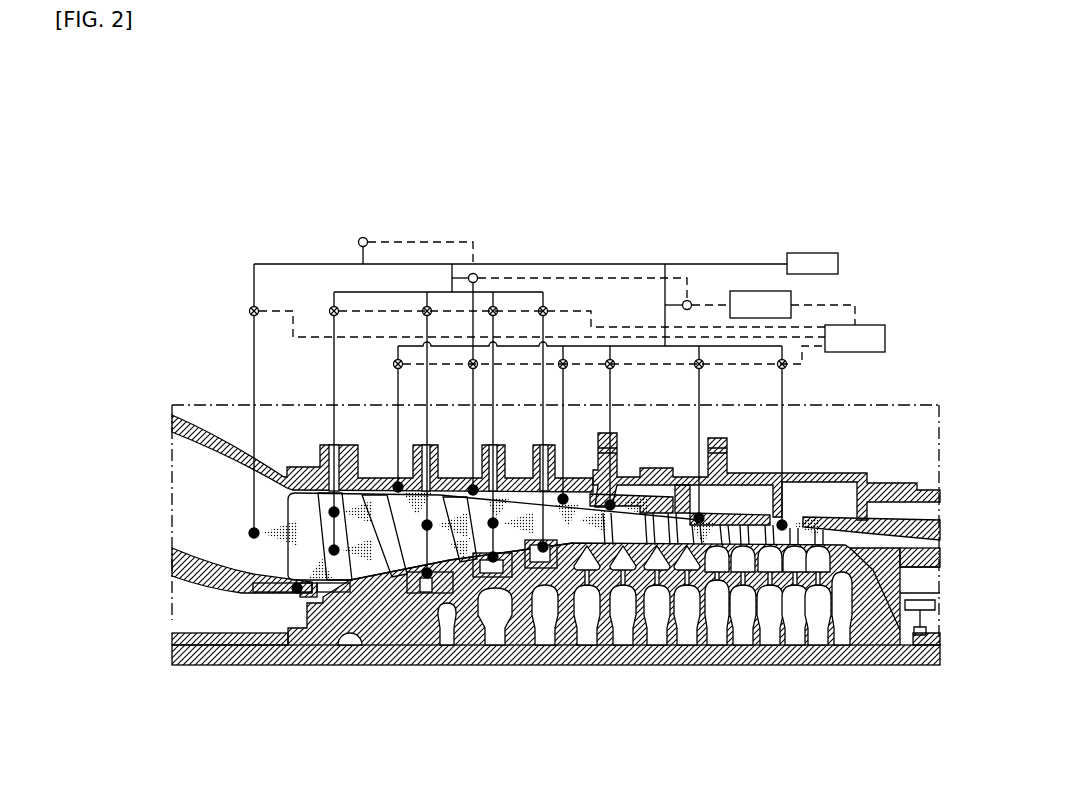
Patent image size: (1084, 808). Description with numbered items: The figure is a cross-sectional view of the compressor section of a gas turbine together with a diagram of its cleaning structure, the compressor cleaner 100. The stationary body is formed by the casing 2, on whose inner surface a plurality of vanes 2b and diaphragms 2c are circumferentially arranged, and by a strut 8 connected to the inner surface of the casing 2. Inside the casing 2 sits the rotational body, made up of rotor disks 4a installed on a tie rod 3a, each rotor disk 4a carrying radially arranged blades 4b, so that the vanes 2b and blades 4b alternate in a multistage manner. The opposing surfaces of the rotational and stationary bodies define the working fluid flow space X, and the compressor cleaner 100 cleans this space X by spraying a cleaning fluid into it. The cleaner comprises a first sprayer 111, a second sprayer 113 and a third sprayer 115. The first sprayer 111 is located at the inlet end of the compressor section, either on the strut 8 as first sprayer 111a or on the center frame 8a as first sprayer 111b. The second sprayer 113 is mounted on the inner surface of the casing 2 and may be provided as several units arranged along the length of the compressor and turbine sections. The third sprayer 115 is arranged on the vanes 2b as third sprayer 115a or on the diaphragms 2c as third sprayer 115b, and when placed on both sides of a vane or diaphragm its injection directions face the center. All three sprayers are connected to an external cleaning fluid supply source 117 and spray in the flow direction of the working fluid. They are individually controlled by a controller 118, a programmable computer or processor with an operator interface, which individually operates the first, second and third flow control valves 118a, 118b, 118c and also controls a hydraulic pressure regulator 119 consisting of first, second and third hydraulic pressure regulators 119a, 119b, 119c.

The compressor cleaner 100 is at (867, 76).
The first sprayer 111 is at (110, 558).
The second sprayer 113 is at (578, 470).
The third sprayer 115 is at (594, 666).
The external cleaning fluid supply source 117 is at (812, 253).
The controller 118 is at (855, 338).
The hydraulic pressure regulator 119 is at (792, 307).
The first flow control valve 118a is at (249, 311).
The second flow control valve 118b is at (393, 364).
The third flow control valve 118c is at (330, 308).
The first hydraulic pressure regulator 119a is at (363, 237).
The second hydraulic pressure regulator 119b is at (690, 300).
The third hydraulic pressure regulator 119c is at (477, 273).
The strut 8 is at (208, 556).
The center frame 8a is at (250, 534).
The casing 2 is at (352, 458).
The vane 2b is at (418, 540).
The diaphragm 2c is at (412, 594).
The tie rod 3a is at (345, 595).
The rotor disk 4a is at (473, 580).
The blade 4b is at (540, 570).
The first sprayer on strut 111a is at (172, 565).
The first sprayer on center frame 111b is at (295, 591).
The third sprayer on vane 115a is at (563, 667).
The third sprayer on diaphragm 115b is at (542, 667).
The working fluid flow space X is at (328, 665).